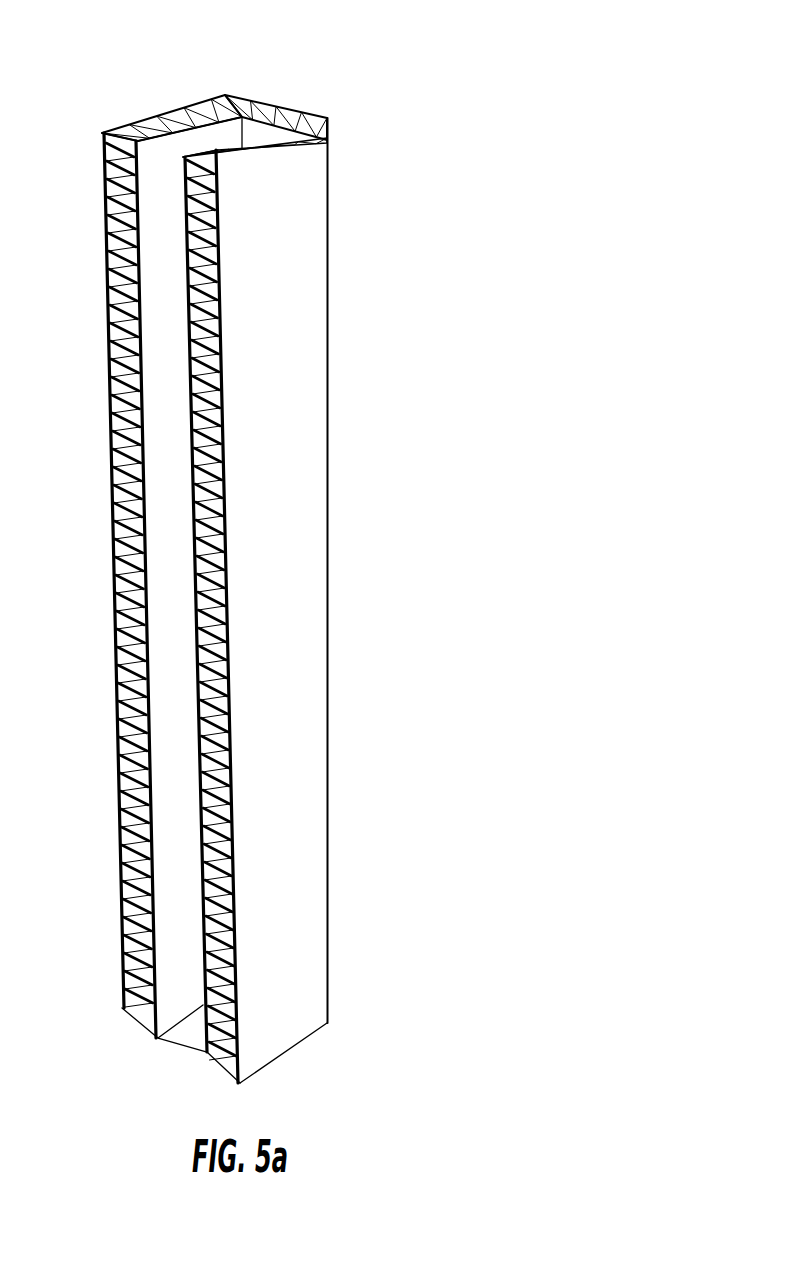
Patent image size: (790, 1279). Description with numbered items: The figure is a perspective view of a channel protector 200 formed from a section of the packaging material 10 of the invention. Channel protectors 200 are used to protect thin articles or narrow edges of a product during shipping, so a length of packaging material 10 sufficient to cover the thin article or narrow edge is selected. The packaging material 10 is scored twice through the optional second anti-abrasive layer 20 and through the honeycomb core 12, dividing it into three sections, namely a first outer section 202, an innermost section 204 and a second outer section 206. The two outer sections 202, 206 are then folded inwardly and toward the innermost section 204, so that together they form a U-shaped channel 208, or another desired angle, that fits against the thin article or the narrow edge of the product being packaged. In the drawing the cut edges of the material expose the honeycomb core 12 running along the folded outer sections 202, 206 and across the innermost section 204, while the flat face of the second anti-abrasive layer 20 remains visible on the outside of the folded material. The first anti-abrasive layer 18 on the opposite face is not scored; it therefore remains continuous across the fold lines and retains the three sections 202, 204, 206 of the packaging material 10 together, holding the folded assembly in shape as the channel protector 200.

The channel protector 200 is at (522, 74).
The outer section 202 is at (102, 235).
The innermost section 204 is at (303, 117).
The outer section 206 is at (283, 215).
The U-shaped channel 208 is at (160, 128).
The second anti-abrasive layer 20 is at (310, 680).
The first anti-abrasive layer 18 is at (170, 837).
The packaging material 10 is at (296, 849).
The honeycomb core 12 is at (158, 1038).